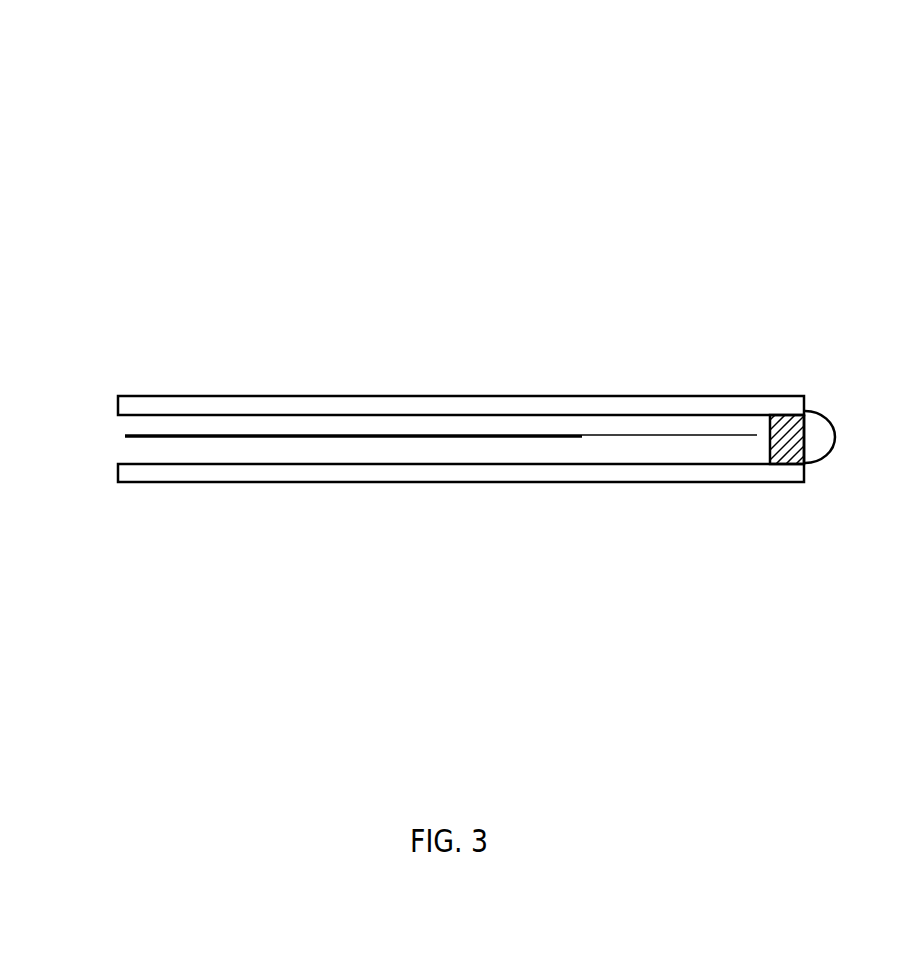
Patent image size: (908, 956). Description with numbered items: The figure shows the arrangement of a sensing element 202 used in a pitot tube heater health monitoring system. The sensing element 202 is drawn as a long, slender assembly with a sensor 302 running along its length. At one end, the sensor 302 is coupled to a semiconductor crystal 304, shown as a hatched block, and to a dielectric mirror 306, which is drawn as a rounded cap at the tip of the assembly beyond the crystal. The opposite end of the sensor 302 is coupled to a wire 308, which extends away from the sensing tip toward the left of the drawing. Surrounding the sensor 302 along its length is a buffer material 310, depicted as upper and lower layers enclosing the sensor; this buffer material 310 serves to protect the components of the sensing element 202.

The sensing element 202 is at (425, 45).
The sensor 302 is at (657, 436).
The semiconductor crystal 304 is at (792, 423).
The dielectric mirror 306 is at (821, 452).
The wire 308 is at (285, 438).
The buffer material 310 is at (307, 404).